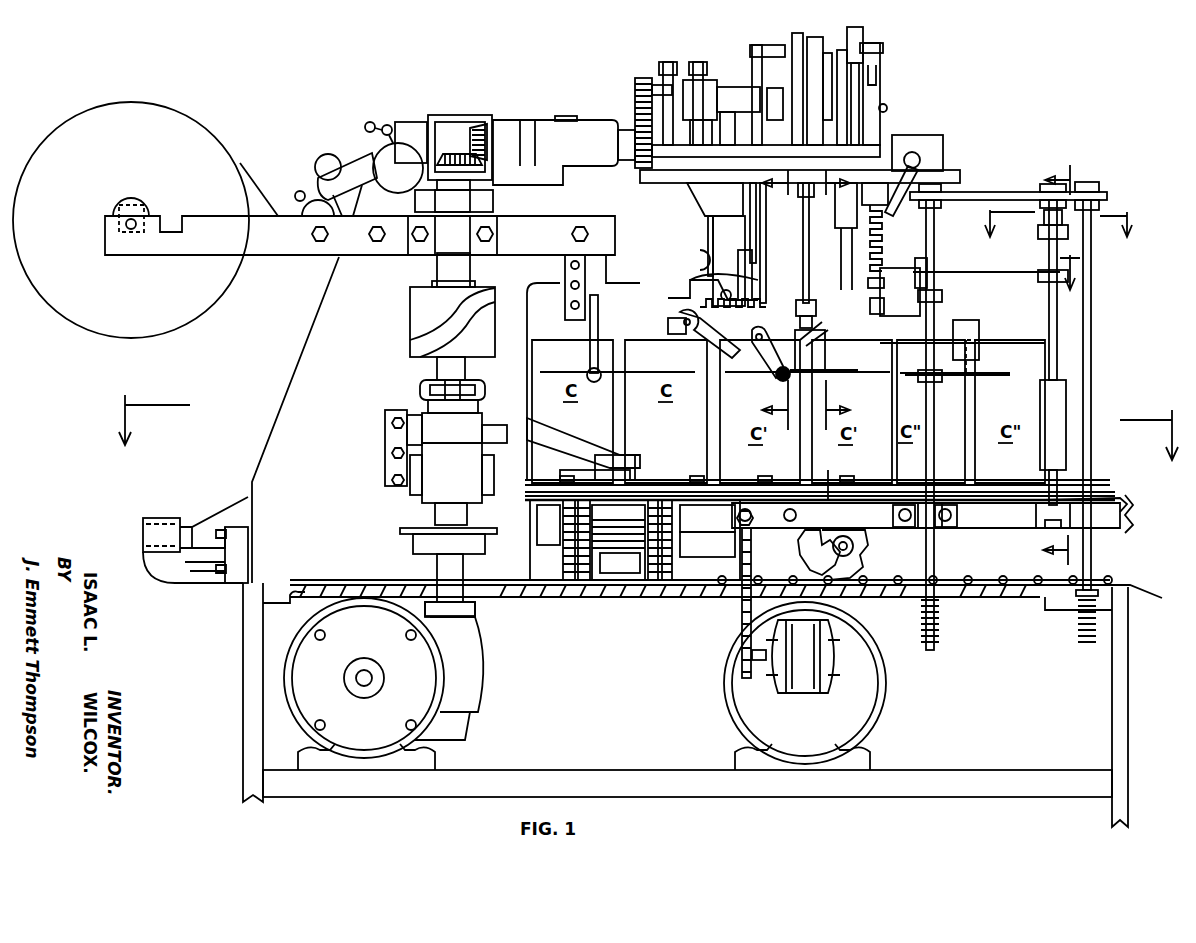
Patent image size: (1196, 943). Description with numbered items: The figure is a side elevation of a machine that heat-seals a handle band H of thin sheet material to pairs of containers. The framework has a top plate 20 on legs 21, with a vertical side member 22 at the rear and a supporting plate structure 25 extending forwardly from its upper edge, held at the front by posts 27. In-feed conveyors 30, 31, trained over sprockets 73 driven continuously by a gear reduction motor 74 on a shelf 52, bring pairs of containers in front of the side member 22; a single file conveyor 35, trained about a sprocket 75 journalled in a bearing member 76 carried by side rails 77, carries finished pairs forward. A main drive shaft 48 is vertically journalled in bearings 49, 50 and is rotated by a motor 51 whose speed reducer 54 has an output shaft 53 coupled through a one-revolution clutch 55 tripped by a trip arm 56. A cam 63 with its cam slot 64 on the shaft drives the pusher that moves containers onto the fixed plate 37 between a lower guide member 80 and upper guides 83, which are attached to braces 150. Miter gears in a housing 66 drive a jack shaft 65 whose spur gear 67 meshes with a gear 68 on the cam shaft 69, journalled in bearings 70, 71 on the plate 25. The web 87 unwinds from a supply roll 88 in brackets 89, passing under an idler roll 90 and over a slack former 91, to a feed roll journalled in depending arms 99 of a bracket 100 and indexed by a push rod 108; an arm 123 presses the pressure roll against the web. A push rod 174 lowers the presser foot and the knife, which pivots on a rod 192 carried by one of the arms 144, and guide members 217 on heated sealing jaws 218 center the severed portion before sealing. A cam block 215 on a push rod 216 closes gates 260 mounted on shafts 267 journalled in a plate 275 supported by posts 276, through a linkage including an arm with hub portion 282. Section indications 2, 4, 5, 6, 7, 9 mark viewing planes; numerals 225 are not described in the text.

The supply roll 88 is at (182, 190).
The brackets 89 is at (286, 255).
The bearing 50 is at (465, 245).
The web 87 is at (262, 198).
The idler roll 90 is at (312, 207).
The slack former 91 is at (326, 154).
The housing 66 is at (456, 124).
The jack shaft 65 is at (618, 145).
The gear 68 is at (635, 80).
The spur gear 67 is at (652, 158).
The bearing 70 is at (706, 90).
The cam shaft 69 is at (738, 98).
The bearing 71 is at (886, 108).
The supporting plate structure 25 is at (700, 146).
The plate 275 is at (975, 194).
The posts 27 is at (932, 440).
The posts 276 is at (1088, 338).
The shafts 267 is at (1050, 322).
The gates 260 is at (1068, 390).
The handle band H is at (968, 328).
The upper guides 83 is at (978, 374).
The push rod 216 is at (884, 234).
The hub portion 282 is at (918, 310).
The bracket 100 is at (737, 203).
The depending arms 99 is at (720, 240).
The push rod 108 is at (706, 234).
The push rod 174 is at (765, 192).
The rod 225 is at (806, 240).
The section line 5 is at (833, 258).
The upwardly extending arms 144 is at (702, 280).
The rod 192 is at (698, 306).
The arm 123 is at (702, 340).
The braces 150 is at (775, 375).
The guide members 217 is at (830, 368).
The sealing jaws 218 is at (824, 338).
The cam block 215 is at (850, 350).
The side member 22 is at (360, 379).
The cam 63 is at (418, 300).
The cam slot 64 is at (450, 330).
The main drive shaft 48 is at (432, 369).
The one-revolution clutch 55 is at (480, 418).
The bearing 49 is at (463, 486).
The output shaft 53 is at (435, 575).
The trip arm 56 is at (565, 447).
The lower guide member 80 is at (788, 480).
The fixed plate 37 is at (824, 482).
The side rails 77 is at (996, 525).
The sprockets 73 is at (645, 519).
The in-feed conveyor 31 is at (618, 566).
The in-feed conveyor 30 is at (705, 560).
The sprocket 75 is at (806, 540).
The bearing member 76 is at (880, 538).
The single file conveyor 35 is at (1115, 500).
The top plate 20 is at (618, 594).
The legs 21 is at (252, 678).
The shelf 52 is at (502, 770).
The motor 51 is at (415, 687).
The speed reducer 54 is at (482, 662).
The gear reduction motor 74 is at (835, 717).
The section line 2 is at (648, 438).
The section line 9 is at (767, 298).
The section line 7 is at (838, 298).
The section line 4 is at (1049, 364).
The section line 6 is at (1057, 234).